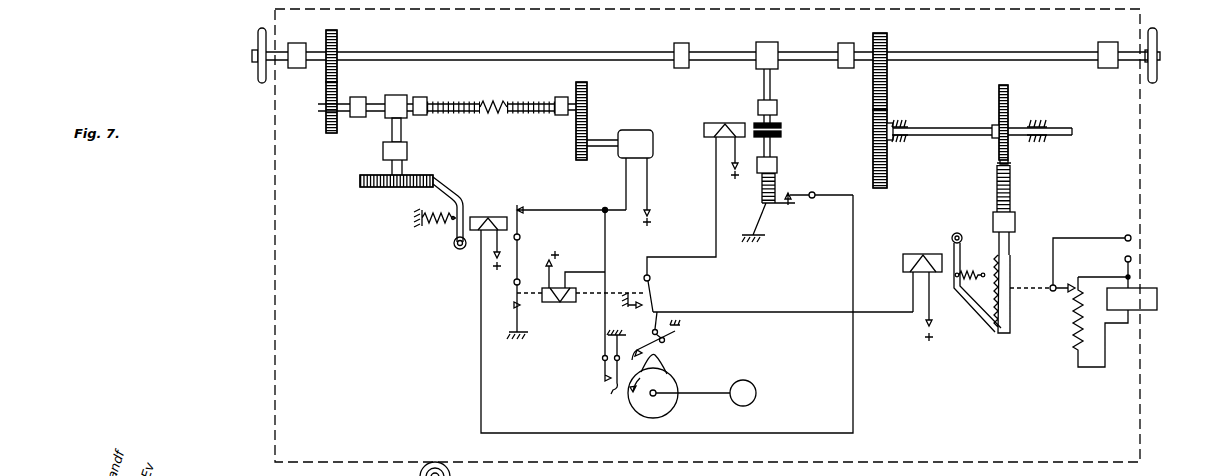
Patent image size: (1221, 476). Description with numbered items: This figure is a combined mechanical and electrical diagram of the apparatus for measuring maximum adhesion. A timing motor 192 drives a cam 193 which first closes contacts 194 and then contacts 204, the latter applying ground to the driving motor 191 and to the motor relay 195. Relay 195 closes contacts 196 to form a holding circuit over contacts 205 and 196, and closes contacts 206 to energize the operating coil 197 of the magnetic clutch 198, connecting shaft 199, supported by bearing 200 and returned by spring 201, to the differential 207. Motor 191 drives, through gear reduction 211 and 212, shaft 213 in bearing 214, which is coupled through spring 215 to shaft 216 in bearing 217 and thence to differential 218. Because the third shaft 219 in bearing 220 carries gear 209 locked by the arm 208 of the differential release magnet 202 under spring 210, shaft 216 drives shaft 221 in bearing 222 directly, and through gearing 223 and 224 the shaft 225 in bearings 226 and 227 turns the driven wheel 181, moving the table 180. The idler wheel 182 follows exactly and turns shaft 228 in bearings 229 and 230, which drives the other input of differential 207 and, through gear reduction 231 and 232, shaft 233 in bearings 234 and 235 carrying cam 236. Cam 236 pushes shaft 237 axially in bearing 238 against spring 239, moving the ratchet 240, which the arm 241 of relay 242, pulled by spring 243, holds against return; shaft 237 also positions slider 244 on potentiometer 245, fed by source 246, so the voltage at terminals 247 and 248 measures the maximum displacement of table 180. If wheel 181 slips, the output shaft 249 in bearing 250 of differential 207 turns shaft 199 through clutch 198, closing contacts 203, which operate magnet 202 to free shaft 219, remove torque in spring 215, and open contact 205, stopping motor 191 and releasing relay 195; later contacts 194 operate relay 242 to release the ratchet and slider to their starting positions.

The table 180 is at (707, 235).
The driven wheel 181 is at (256, 36).
The idler wheel 182 is at (1158, 40).
The driving motor 191 is at (636, 130).
The timing motor 192 is at (733, 405).
The cam 193 is at (678, 378).
The contacts 194 is at (665, 347).
The motor relay 195 is at (562, 303).
The contacts 196 is at (516, 312).
The operating coil 197 is at (716, 123).
The magnetic clutch 198 is at (782, 127).
The shaft 199 is at (772, 147).
The bearing 200 is at (778, 165).
The spring 201 is at (762, 200).
The differential release magnet 202 is at (478, 217).
The contacts 203 is at (814, 198).
The contacts 204 is at (606, 385).
The contacts 205 is at (520, 216).
The contacts 206 is at (652, 294).
The differential 207 is at (768, 42).
The arm 208 is at (452, 190).
The gear 209 is at (375, 175).
The spring 210 is at (446, 222).
The gear reduction 211 is at (588, 137).
The gear reduction 212 is at (588, 85).
The shaft 213 is at (572, 103).
The bearing 214 is at (556, 99).
The spring 215 is at (490, 102).
The shaft 216 is at (455, 103).
The bearing 217 is at (421, 97).
The differential 218 is at (396, 95).
The third shaft 219 is at (402, 131).
The bearing 220 is at (408, 152).
The shaft 221 is at (375, 111).
The bearing 222 is at (358, 97).
The gearing mechanism 223 is at (326, 125).
The gearing mechanism 224 is at (334, 32).
The shaft 225 is at (397, 52).
The bearing 226 is at (294, 43).
The bearing 227 is at (681, 43).
The shaft 228 is at (968, 52).
The bearing 229 is at (1108, 42).
The bearing 230 is at (846, 43).
The gear reduction 231 is at (887, 38).
The gear reduction 232 is at (888, 96).
The shaft 233 is at (938, 128).
The bearing 234 is at (900, 144).
The bearing 235 is at (1038, 143).
The cam 236 is at (1009, 95).
The shaft 237 is at (1011, 195).
The bearing 238 is at (1016, 220).
The spring 239 is at (1011, 175).
The ratchet 240 is at (1011, 318).
The arm 241 is at (972, 308).
The relay 242 is at (910, 254).
The spring 243 is at (969, 270).
The slider 244 is at (1063, 284).
The potentiometer 245 is at (1074, 345).
The source 246 is at (1157, 290).
The terminal 247 is at (1131, 237).
The terminal 248 is at (1131, 258).
The shaft 249 is at (771, 85).
The bearing 250 is at (778, 108).